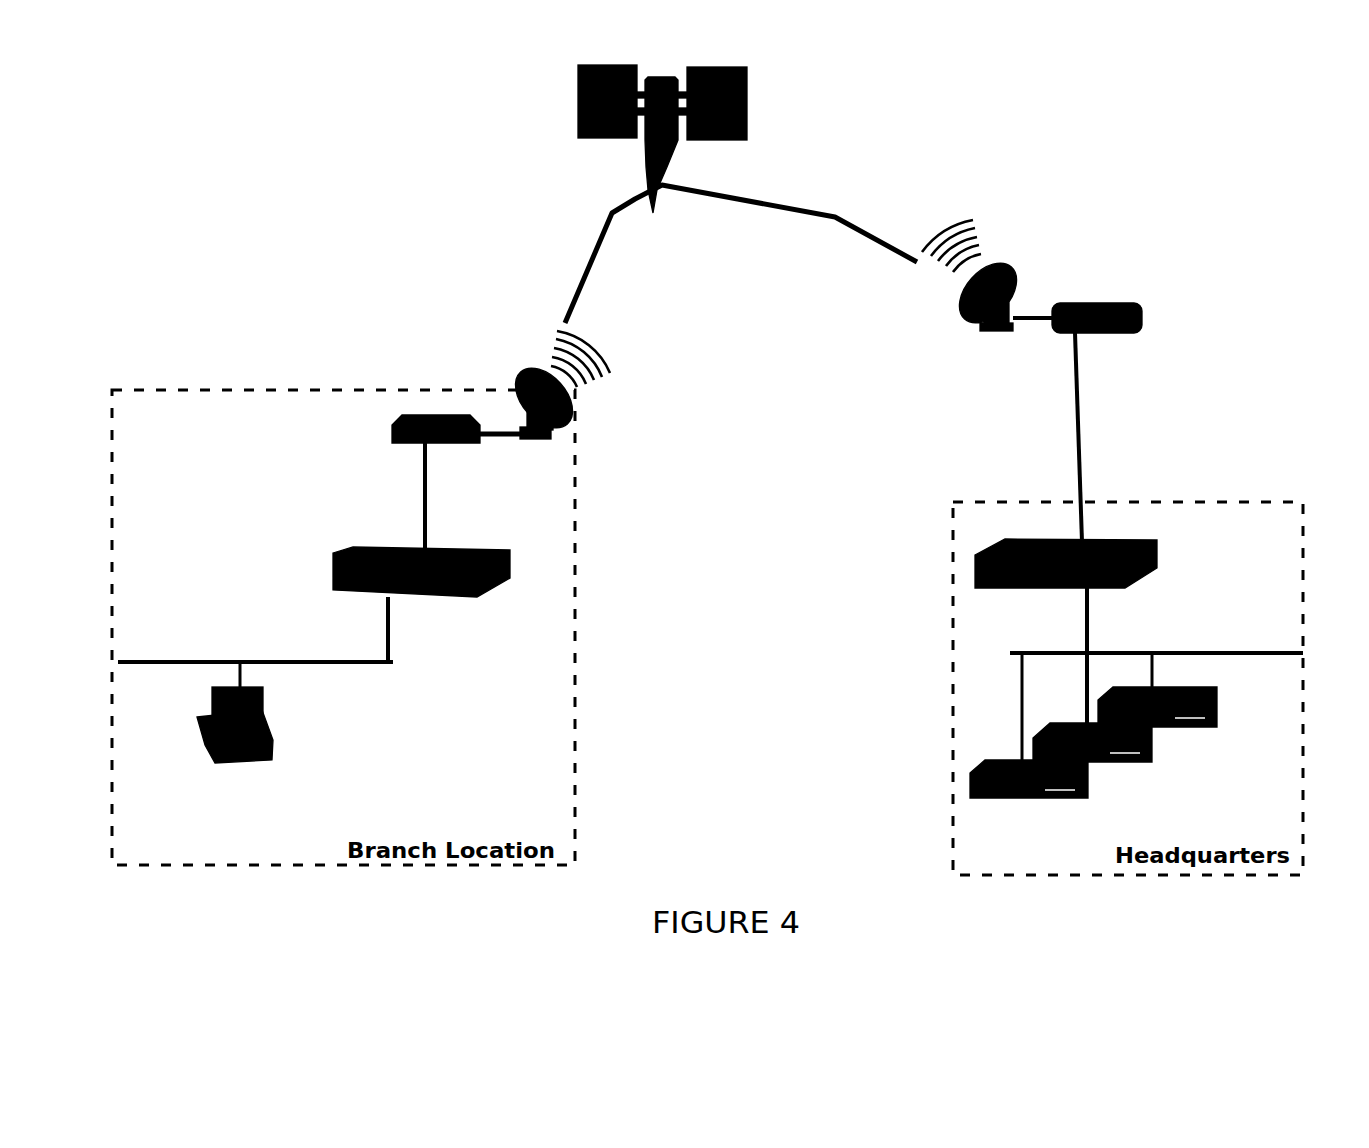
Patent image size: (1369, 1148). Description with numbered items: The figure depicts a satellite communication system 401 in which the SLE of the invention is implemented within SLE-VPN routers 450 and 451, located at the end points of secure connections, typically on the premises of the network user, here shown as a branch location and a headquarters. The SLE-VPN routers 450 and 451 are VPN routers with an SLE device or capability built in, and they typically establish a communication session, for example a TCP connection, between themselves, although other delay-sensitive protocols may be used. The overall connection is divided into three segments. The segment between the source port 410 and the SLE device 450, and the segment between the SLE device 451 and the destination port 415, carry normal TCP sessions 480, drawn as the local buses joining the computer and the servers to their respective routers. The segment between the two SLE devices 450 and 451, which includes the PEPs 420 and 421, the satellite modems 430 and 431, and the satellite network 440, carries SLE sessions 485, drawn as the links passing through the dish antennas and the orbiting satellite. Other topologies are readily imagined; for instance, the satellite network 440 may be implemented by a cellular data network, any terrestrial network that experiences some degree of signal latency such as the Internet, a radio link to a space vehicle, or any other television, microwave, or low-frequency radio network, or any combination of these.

The satellite communication system 401 is at (276, 102).
The source port 410 is at (267, 760).
The destination port 415 is at (1097, 770).
The PEP 420 is at (420, 410).
The PEP 421 is at (1093, 300).
The satellite modem 430 is at (512, 380).
The satellite modem 431 is at (1018, 283).
The satellite network 440 is at (572, 115).
The SLE-VPN router 450 is at (352, 537).
The SLE-VPN router 451 is at (1135, 538).
The normal TCP sessions 480 is at (343, 672).
The SLE sessions 485 is at (1060, 420).